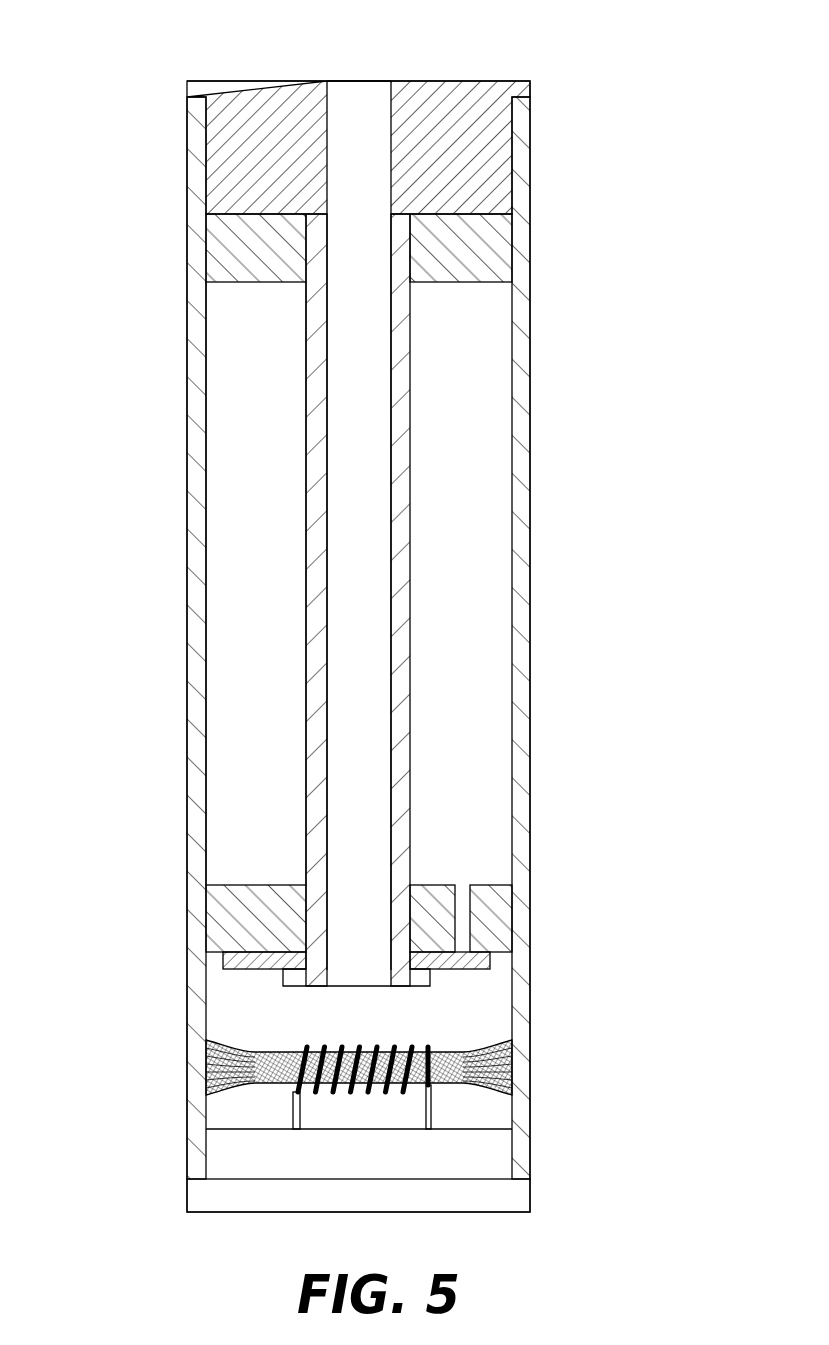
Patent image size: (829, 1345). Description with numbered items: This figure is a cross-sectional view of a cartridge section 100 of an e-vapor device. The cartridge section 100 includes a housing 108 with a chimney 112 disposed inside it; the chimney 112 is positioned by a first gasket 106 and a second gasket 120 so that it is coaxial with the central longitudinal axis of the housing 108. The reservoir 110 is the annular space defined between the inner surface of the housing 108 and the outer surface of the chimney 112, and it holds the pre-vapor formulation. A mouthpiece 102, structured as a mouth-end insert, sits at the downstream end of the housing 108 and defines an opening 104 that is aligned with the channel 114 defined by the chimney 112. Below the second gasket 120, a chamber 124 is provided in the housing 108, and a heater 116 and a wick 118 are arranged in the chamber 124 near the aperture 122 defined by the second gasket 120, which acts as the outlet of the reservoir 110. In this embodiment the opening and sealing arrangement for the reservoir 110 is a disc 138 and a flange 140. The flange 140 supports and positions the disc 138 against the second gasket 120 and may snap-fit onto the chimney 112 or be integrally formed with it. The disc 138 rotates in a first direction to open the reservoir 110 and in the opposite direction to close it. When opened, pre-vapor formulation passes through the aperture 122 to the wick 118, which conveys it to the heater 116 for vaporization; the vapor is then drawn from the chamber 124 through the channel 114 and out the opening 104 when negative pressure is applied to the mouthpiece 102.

The cartridge section 100 is at (93, 41).
The mouthpiece 102 is at (483, 95).
The opening 104 is at (357, 100).
The first gasket 106 is at (470, 246).
The housing 108 is at (515, 412).
The reservoir 110 is at (260, 542).
The chimney 112 is at (397, 618).
The channel 114 is at (345, 747).
The heater 116 is at (430, 1050).
The wick 118 is at (470, 1055).
The second gasket 120 is at (225, 903).
The aperture 122 is at (458, 910).
The chamber 124 is at (225, 1022).
The disc 138 is at (233, 962).
The flange 140 is at (282, 977).